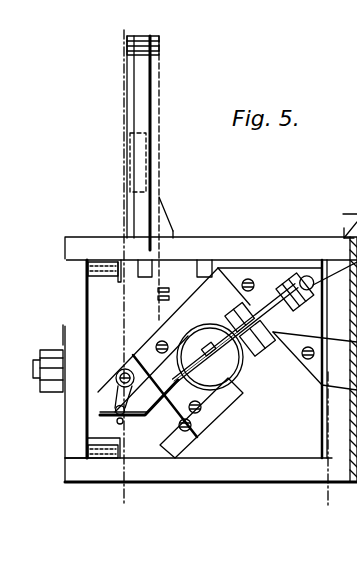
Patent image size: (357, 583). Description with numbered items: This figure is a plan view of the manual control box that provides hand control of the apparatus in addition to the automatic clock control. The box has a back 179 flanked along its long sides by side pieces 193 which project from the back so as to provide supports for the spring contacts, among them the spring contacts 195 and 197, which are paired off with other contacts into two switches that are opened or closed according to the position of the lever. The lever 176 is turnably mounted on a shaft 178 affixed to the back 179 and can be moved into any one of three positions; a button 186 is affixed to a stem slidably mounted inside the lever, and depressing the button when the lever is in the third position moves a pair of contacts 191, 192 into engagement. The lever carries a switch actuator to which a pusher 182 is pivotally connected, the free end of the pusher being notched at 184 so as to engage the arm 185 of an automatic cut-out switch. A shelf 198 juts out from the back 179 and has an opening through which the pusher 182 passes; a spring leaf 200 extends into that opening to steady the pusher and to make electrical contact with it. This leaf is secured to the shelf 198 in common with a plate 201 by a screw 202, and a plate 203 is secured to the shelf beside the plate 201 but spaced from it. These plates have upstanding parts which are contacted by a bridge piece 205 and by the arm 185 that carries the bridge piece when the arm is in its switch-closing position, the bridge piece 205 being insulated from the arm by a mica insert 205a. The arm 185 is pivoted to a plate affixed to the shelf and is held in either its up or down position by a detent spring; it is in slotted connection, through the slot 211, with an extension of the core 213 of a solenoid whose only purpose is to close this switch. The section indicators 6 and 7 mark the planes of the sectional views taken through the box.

The section line 7- 7 is at (124, 30).
The section line 6- 6 is at (160, 36).
The lever 176 is at (143, 78).
The button 186 is at (147, 160).
The side pieces 193 is at (78, 242).
The spring contact 197 is at (88, 274).
The contact 191 is at (157, 290).
The contact 192 is at (157, 298).
The shelf 198 is at (92, 334).
The shaft 178 is at (68, 394).
The mica insert 205a is at (200, 417).
The screw 202 is at (125, 370).
The plate 203 is at (230, 402).
The slot 211 is at (215, 385).
The core 213 is at (233, 373).
The bridge piece 205 is at (200, 403).
The notch 184 is at (110, 418).
The pusher 182 is at (123, 422).
The plate 201 is at (120, 380).
The back 179 is at (72, 416).
The spring leaf 200 is at (118, 407).
The spring contact 195 is at (112, 458).
The arm 185 is at (82, 470).